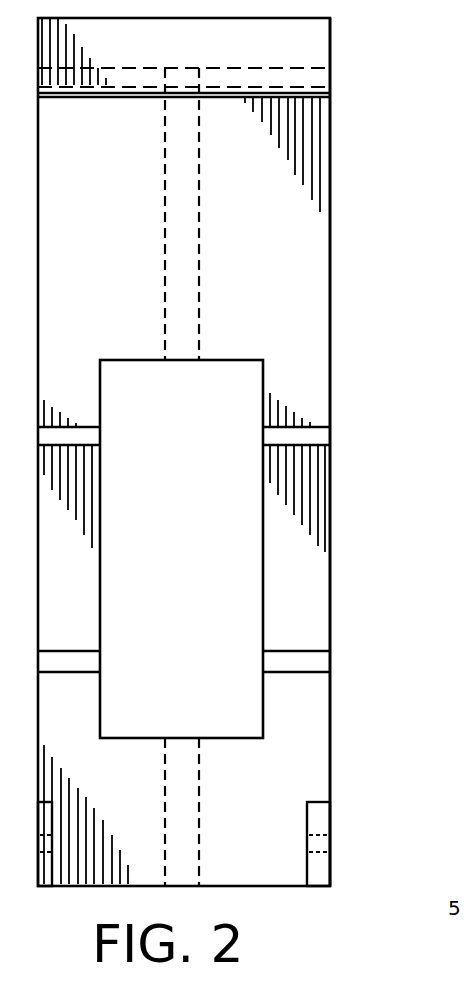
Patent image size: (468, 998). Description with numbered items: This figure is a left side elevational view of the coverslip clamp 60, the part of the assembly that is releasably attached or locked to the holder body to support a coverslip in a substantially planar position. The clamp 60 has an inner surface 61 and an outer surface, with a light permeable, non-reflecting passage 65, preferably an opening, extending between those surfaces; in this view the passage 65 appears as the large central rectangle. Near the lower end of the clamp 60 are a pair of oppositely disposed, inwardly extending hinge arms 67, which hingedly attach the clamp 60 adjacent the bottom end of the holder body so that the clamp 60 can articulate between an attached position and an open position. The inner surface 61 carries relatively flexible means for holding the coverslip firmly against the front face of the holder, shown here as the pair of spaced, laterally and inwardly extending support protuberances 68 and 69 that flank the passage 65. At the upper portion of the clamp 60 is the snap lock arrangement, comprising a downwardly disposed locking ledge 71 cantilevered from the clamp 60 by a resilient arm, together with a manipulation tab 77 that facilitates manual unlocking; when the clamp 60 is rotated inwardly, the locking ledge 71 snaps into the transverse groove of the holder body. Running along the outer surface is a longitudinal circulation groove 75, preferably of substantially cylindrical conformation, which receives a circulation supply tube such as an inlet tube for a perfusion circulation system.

The clamp 60 is at (352, 300).
The inner surface 61 is at (310, 368).
The light permeable, non-reflecting passage 65 is at (263, 540).
The hinge arms 67 is at (42, 821).
The support protuberance 68 is at (303, 436).
The support protuberance 69 is at (300, 656).
The locking ledge 71 is at (128, 98).
The longitudinal circulation groove 75 is at (200, 278).
The manipulation tab 77 is at (318, 53).